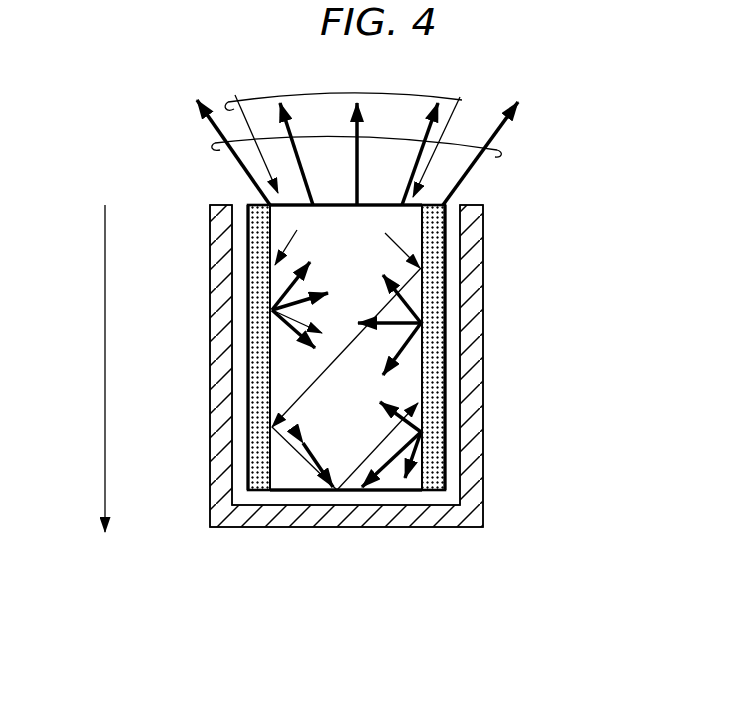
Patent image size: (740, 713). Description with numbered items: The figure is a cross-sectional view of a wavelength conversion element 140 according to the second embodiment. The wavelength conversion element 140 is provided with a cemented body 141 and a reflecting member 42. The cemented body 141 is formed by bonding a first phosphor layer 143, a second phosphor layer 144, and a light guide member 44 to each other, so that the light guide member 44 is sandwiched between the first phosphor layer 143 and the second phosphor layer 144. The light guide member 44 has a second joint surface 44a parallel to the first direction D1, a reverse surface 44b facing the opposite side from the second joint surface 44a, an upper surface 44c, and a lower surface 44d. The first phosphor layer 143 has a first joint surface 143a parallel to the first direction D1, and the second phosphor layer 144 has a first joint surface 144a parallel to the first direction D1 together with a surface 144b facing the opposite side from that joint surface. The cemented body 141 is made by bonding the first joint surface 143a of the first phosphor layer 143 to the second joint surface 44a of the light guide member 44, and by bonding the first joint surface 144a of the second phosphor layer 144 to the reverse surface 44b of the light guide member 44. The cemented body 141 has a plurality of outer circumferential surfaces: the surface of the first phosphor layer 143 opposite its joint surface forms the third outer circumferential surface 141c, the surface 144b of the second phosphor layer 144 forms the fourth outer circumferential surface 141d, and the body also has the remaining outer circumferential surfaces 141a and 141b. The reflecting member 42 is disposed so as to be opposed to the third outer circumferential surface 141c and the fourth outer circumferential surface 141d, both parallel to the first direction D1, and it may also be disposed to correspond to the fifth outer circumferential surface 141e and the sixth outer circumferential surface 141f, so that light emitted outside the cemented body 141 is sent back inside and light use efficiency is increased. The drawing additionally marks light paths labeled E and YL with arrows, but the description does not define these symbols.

The wavelength conversion element 140 is at (569, 138).
The cemented body 141 is at (467, 621).
The outer circumferential surface 141a is at (297, 205).
The outer circumferential surface 141b is at (310, 490).
The third outer circumferential surface 141c is at (447, 412).
The fourth outer circumferential surface 141d is at (247, 377).
The fifth outer circumferential surface 141e is at (421, 471).
The sixth outer circumferential surface 141f is at (405, 224).
The reflecting member 42 is at (477, 268).
The light guide member 44 is at (390, 478).
The second joint surface 44a is at (422, 348).
The reverse surface 44b is at (257, 405).
The upper surface 44c is at (388, 203).
The lower surface 44d is at (346, 544).
The first phosphor layer 143 is at (438, 483).
The first joint surface 143a is at (422, 374).
The second phosphor layer 144 is at (258, 484).
The first joint surface 144a is at (270, 360).
The surface 144b is at (185, 347).
The excitation light E is at (468, 106).
The fluorescent light YL is at (220, 152).
The first direction D1 is at (104, 328).